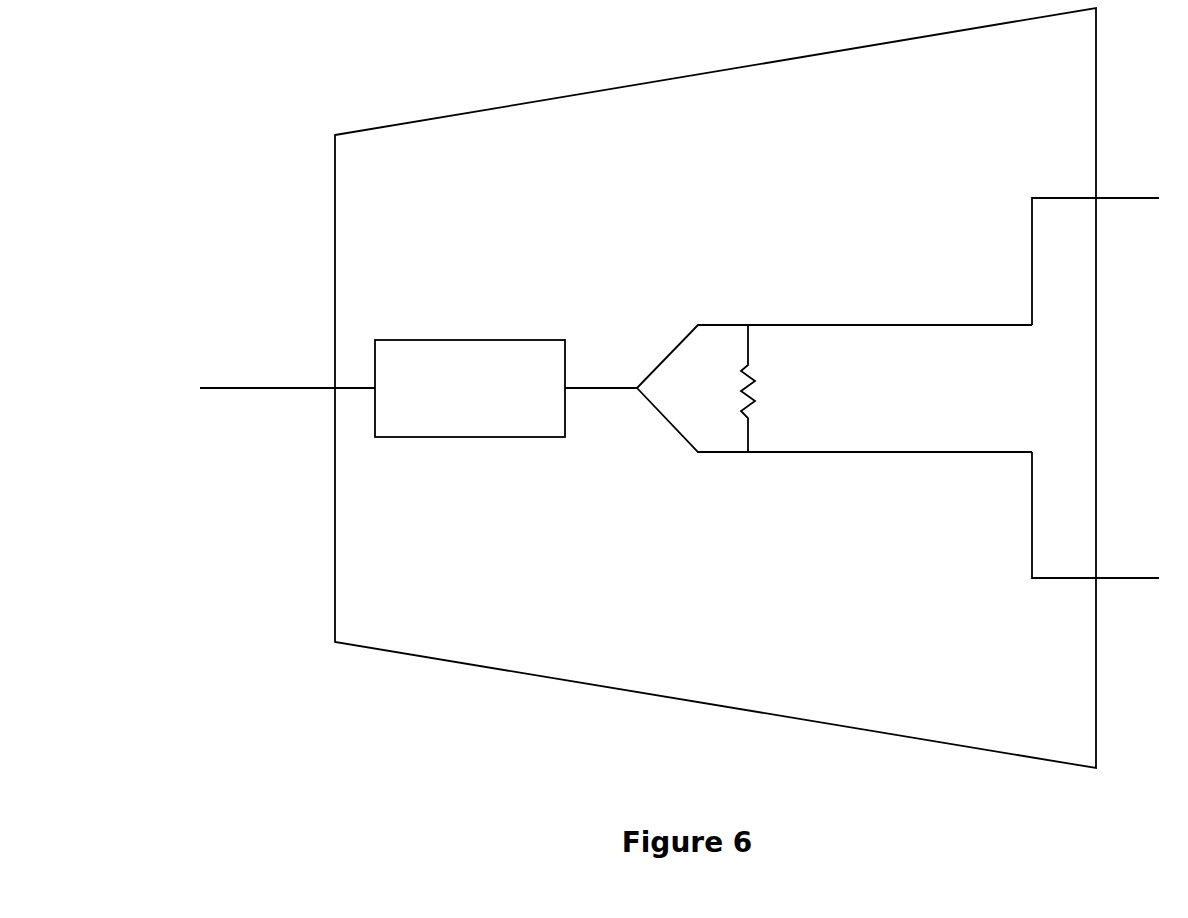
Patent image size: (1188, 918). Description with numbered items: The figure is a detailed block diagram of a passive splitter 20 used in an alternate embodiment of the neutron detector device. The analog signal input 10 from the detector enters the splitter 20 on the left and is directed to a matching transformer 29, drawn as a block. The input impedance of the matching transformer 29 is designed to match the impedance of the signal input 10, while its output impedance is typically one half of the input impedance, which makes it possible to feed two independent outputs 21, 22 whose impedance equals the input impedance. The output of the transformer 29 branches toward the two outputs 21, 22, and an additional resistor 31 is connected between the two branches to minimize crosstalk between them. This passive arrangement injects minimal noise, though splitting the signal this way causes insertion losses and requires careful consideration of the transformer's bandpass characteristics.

The analog signal input 10 is at (270, 378).
The passive splitter 20 is at (416, 106).
The first independent output 21 is at (1130, 190).
The second independent output 22 is at (1128, 566).
The matching transformer 29 is at (460, 326).
The resistor 31 is at (764, 390).